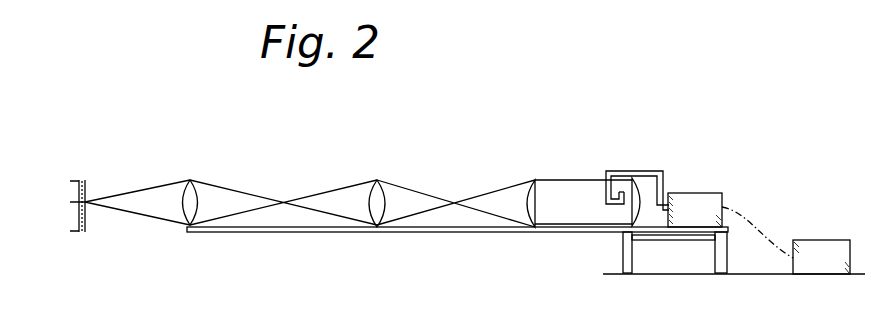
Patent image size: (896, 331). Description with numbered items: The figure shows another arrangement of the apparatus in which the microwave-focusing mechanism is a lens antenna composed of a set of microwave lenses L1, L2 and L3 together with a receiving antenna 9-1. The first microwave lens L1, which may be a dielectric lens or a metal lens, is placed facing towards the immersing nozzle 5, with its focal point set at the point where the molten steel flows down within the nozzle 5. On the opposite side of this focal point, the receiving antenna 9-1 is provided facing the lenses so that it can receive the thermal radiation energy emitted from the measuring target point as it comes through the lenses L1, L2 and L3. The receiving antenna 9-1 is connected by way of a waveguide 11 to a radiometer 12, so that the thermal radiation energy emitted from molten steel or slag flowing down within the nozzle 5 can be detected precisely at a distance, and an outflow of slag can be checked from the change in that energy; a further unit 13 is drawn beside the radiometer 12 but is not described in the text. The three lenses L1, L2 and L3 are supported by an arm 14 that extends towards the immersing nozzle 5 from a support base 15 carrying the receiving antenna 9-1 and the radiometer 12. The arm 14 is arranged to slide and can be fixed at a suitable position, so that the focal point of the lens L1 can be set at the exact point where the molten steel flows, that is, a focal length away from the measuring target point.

The immersing nozzle 5 is at (87, 181).
The microwave lens L1 is at (190, 180).
The microwave lens L2 is at (377, 180).
The microwave lens L3 is at (530, 180).
The waveguide 11 is at (606, 193).
The receiving antenna 9-1 is at (640, 184).
The radiometer 12 is at (707, 200).
The measuring instrument 13 is at (820, 245).
The arm 14 is at (303, 233).
The support base 15 is at (623, 260).